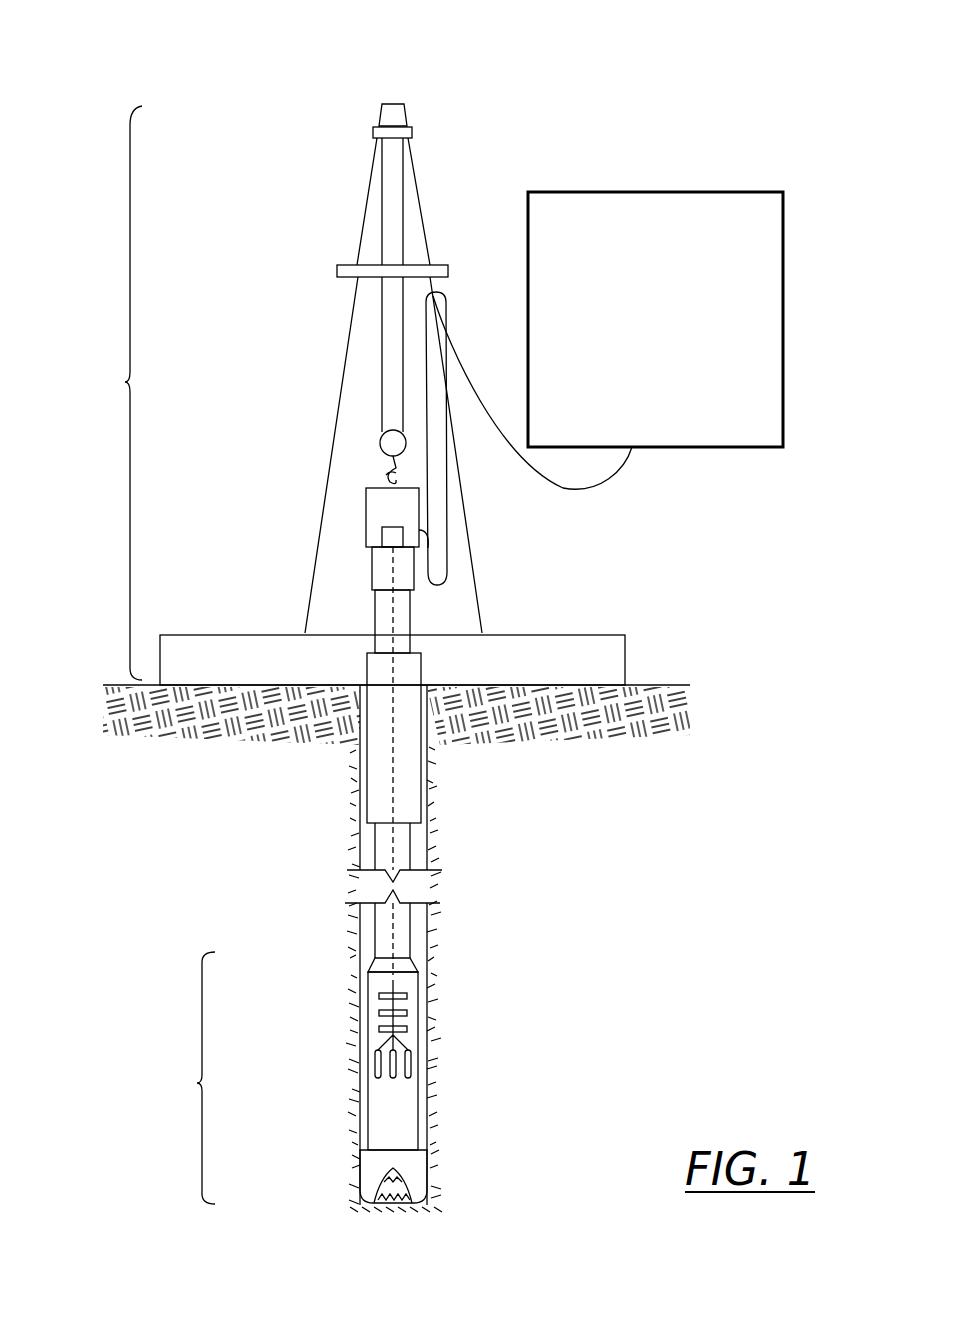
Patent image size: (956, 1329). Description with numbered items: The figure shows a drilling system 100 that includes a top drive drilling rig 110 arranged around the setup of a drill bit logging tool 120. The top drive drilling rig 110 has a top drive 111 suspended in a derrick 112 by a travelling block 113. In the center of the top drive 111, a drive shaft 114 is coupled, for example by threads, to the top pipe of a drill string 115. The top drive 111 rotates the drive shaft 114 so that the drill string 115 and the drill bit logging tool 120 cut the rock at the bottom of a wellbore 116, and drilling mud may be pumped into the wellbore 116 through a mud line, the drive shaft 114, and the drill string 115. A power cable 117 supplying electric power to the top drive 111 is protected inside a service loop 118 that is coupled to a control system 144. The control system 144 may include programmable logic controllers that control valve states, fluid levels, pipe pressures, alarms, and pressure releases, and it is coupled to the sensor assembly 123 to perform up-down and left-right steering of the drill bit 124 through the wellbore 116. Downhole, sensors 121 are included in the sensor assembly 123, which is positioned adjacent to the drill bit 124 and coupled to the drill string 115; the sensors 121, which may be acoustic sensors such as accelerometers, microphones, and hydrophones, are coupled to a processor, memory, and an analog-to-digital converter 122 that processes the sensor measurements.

The drilling system 100 is at (288, 92).
The top drive drilling rig 110 is at (128, 382).
The top drive 111 is at (366, 505).
The derrick 112 is at (317, 556).
The travelling block 113 is at (380, 441).
The drive shaft 114 is at (372, 572).
The drill string 115 is at (360, 857).
The wellbore 116 is at (367, 825).
The power cable 117 is at (450, 516).
The service loop 118 is at (598, 483).
The control system 144 is at (675, 281).
The drill bit logging tool 120 is at (198, 1083).
The sensors 121 is at (378, 1065).
The analog-to-digital converter 122 is at (413, 1030).
The sensor assembly 123 is at (368, 992).
The drill bit 124 is at (368, 1195).